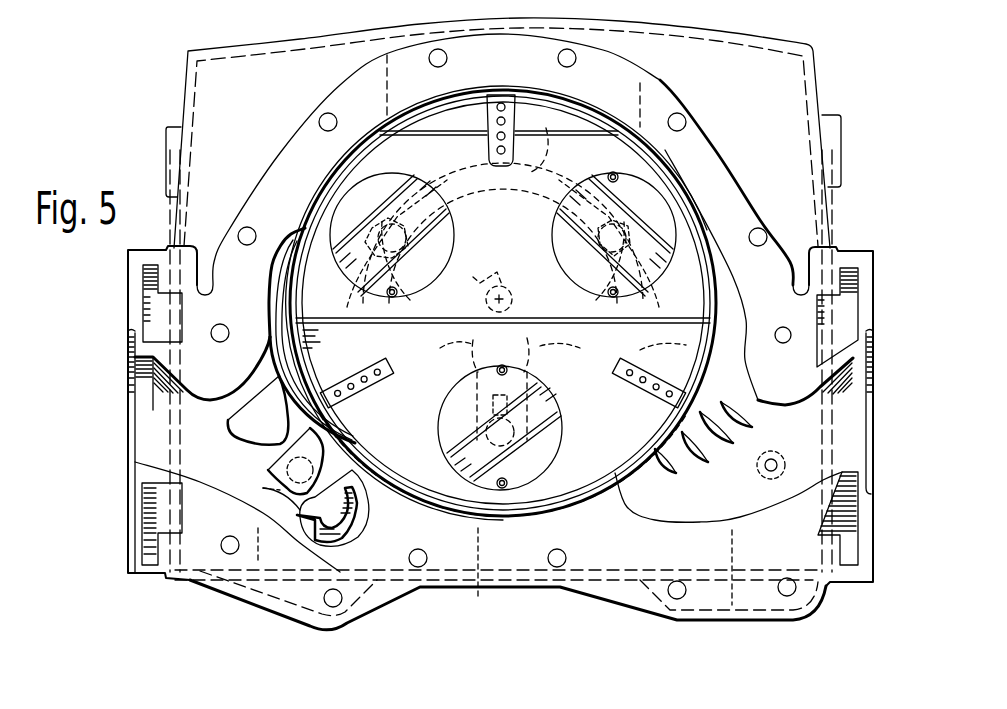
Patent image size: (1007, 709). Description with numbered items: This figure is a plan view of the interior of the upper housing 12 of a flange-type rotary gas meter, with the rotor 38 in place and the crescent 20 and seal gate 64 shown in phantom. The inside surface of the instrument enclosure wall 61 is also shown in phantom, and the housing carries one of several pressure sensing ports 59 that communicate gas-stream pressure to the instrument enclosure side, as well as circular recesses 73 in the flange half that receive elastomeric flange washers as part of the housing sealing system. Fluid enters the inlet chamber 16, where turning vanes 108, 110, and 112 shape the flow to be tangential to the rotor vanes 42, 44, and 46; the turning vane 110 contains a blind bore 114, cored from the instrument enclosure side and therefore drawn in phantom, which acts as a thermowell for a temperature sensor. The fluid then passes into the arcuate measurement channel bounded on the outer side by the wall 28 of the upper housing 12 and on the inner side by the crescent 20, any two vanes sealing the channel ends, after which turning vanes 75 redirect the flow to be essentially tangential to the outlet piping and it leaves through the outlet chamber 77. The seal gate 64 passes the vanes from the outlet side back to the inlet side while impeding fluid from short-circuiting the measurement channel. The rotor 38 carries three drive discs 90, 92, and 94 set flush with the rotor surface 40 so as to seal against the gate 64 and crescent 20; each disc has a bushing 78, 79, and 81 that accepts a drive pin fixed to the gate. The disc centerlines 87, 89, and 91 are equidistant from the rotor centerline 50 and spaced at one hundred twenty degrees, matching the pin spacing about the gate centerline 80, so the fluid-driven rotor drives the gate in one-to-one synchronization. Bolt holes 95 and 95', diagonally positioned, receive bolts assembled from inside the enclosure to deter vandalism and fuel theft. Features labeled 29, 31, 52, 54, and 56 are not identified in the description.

The upper housing 12 is at (287, 594).
The inlet chamber 16 is at (153, 446).
The crescent 20 is at (546, 138).
The wall 28 is at (572, 108).
The phantom gear line 29 is at (555, 342).
The center pivot 31 is at (513, 289).
The rotor 38 is at (716, 295).
The rotor surface 40 is at (513, 254).
The rotor vane 42 is at (486, 113).
The rotor vane 44 is at (362, 390).
The rotor vane 46 is at (640, 390).
The rotor centerline 50 is at (480, 281).
The upper left disc 52 is at (427, 195).
The lower disc 54 is at (458, 393).
The upper right disc 56 is at (598, 180).
The pressure sensing port 59 is at (765, 475).
The instrument enclosure wall 61 is at (672, 31).
The seal gate 64 is at (686, 357).
The circular recess 73 is at (873, 490).
The turning vanes 75 is at (752, 428).
The outlet chamber 77 is at (808, 451).
The bushing 78 is at (392, 298).
The bushing 79 is at (520, 484).
The gate centerline 80 is at (456, 342).
The bushing 81 is at (617, 293).
The disc centerline 87 is at (374, 246).
The disc centerline 89 is at (482, 430).
The drive disc 90 is at (362, 192).
The disc centerline 91 is at (622, 221).
The drive disc 92 is at (543, 393).
The drive disc 94 is at (633, 194).
The bolt hole 95 is at (208, 579).
The bolt hole 95' is at (775, 355).
The turning vane 108 is at (245, 433).
The turning vane 110 is at (268, 470).
The turning vane 112 is at (312, 523).
The blind bore 114 is at (263, 488).